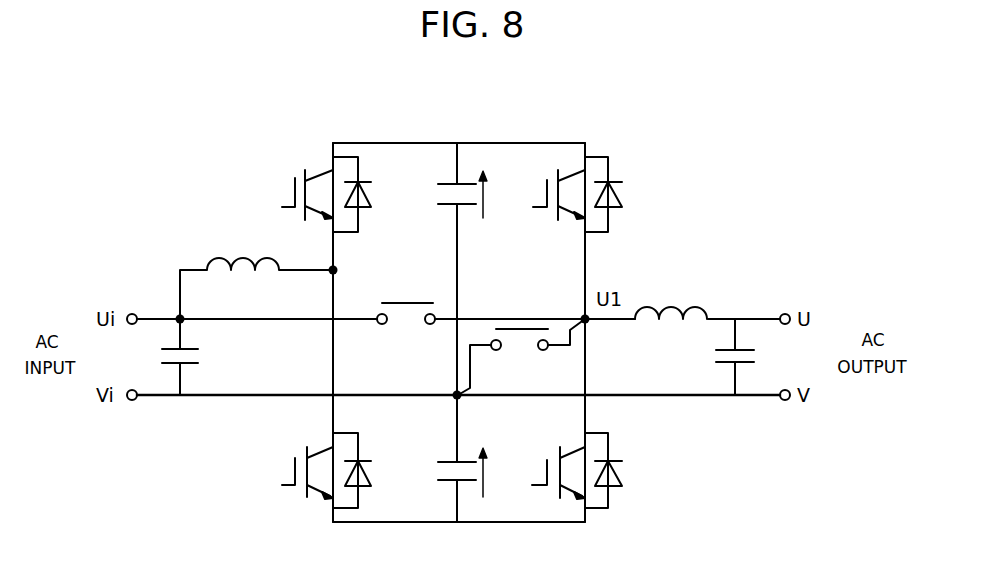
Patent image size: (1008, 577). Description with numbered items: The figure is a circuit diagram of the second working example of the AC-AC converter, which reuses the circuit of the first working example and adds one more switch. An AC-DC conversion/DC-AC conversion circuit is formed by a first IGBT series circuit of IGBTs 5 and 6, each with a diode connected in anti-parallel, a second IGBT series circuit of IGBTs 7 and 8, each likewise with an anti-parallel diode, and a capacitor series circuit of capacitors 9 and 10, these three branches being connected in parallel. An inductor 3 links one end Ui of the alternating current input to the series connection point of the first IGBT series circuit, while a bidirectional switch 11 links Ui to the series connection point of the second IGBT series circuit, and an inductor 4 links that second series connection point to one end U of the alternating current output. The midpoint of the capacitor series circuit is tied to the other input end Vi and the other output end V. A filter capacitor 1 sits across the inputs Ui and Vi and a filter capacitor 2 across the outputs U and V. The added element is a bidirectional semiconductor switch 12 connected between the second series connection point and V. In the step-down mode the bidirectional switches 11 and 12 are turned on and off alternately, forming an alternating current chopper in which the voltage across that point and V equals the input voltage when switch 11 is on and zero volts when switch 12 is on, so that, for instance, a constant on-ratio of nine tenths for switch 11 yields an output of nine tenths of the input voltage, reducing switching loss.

The filter capacitor 1 is at (171, 328).
The filter capacitor 2 is at (750, 328).
The inductor 3 is at (250, 247).
The inductor 4 is at (653, 290).
The IGBT 5 is at (282, 188).
The IGBT 6 is at (282, 467).
The IGBT 7 is at (627, 197).
The IGBT 8 is at (628, 472).
The capacitor 9 is at (443, 168).
The capacitor 10 is at (438, 462).
The bidirectional switch 11 is at (420, 328).
The bidirectional semiconductor switch 12 is at (533, 357).